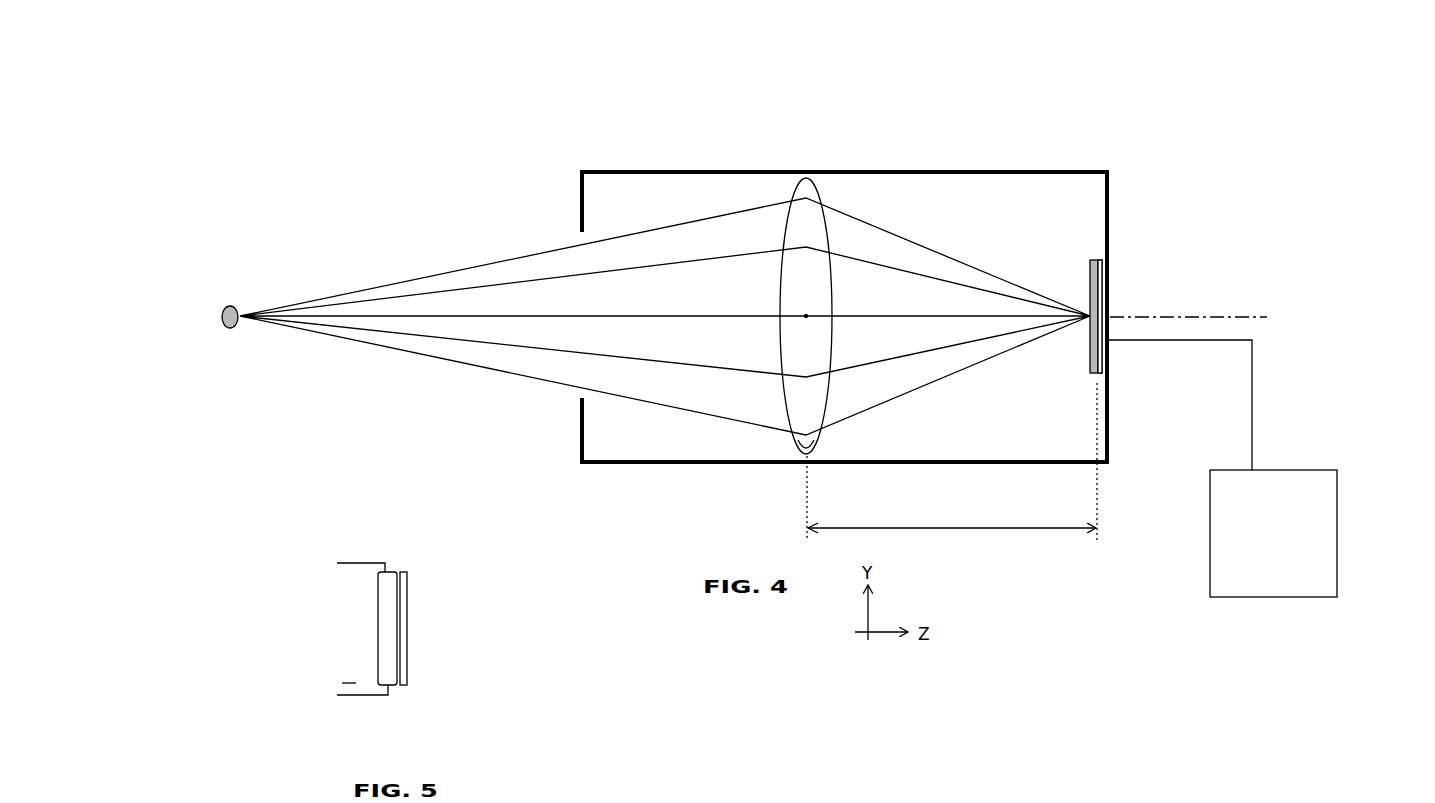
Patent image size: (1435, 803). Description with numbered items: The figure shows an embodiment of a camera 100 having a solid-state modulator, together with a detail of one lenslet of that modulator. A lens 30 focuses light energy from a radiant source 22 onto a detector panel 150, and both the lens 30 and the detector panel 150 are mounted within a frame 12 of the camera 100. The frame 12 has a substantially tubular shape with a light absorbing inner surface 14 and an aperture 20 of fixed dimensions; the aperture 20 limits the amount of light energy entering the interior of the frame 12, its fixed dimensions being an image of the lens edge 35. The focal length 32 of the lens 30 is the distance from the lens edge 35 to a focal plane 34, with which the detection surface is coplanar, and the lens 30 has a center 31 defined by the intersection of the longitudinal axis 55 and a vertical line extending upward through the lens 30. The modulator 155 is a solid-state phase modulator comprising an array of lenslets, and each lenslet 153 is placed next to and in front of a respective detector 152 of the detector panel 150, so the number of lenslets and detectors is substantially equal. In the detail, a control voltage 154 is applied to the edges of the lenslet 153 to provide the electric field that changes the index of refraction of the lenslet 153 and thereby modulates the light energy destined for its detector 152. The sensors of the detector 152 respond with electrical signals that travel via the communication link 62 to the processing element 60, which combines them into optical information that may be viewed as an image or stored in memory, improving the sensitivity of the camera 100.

In FIG. 4, the camera 100 is at (598, 118).
In FIG. 4, the frame 12 is at (920, 170).
In FIG. 4, the light absorbing inner surface 14 is at (655, 460).
In FIG. 4, the aperture 20 is at (565, 240).
In FIG. 4, the radiant source 22 is at (236, 306).
In FIG. 4, the lens 30 is at (806, 178).
In FIG. 4, the center 31 is at (806, 316).
In FIG. 4, the lens edge 35 is at (810, 434).
In FIG. 4, the detector panel 150 is at (1105, 258).
In FIG. 4, the modulator 155 is at (1090, 330).
In FIG. 4, the longitudinal axis 55 is at (1215, 317).
In FIG. 4, the focal plane 34 is at (1100, 500).
In FIG. 4, the focal length 32 is at (951, 498).
In FIG. 4, the communication link 62 is at (1253, 432).
In FIG. 4, the processing element 60 is at (1273, 533).
In FIG. 5, the lenslet 153 is at (390, 570).
In FIG. 5, the detector 152 is at (408, 615).
In FIG. 5, the control voltage 154 is at (326, 629).